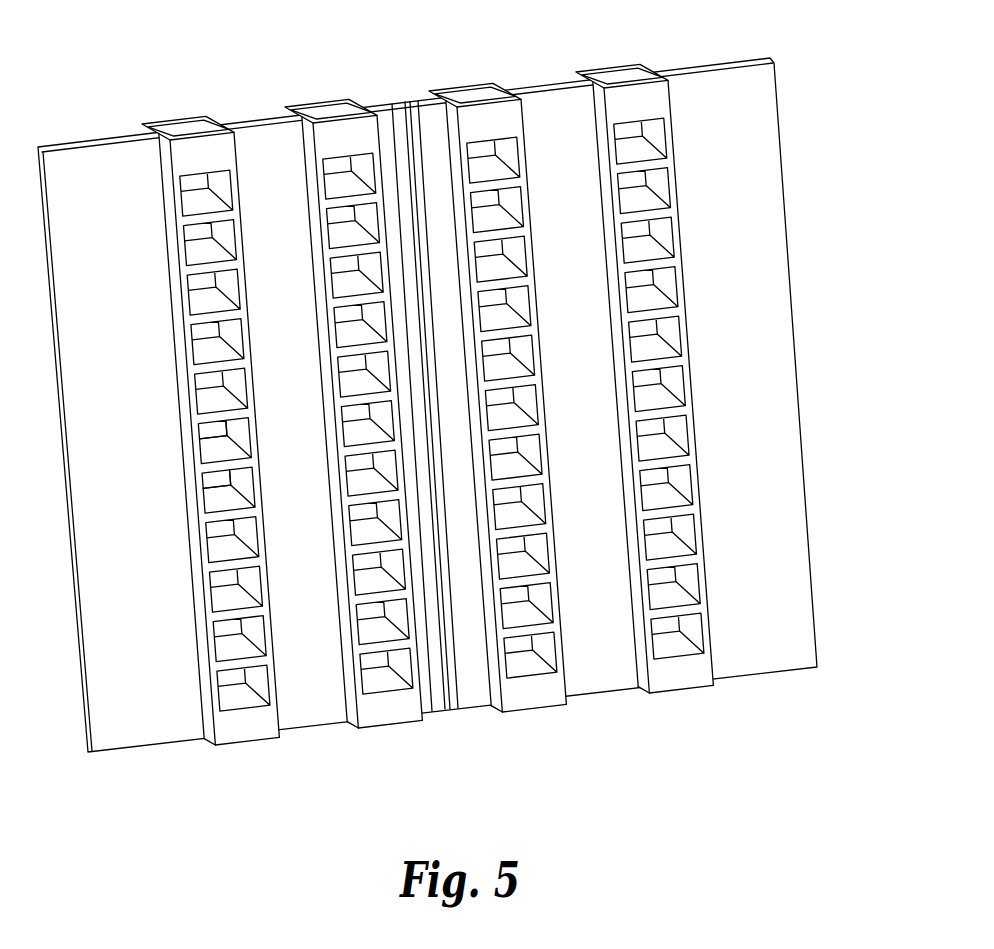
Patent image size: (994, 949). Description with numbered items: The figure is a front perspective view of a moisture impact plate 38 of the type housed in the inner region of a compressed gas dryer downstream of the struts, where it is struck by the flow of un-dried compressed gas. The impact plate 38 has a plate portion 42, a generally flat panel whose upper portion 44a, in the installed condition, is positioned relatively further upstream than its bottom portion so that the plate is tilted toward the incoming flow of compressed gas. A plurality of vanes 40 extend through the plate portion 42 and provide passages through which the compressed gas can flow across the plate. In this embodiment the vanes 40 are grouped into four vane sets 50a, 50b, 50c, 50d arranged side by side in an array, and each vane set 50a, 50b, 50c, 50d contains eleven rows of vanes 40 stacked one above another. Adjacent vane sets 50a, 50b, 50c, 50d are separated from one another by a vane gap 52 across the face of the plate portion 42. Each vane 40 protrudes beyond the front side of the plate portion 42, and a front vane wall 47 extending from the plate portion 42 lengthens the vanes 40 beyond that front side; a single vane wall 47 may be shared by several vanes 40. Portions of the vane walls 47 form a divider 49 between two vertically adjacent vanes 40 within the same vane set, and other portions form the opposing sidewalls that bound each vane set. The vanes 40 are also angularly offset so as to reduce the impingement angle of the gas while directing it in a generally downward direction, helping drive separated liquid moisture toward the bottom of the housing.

The impact plate 38 is at (457, 379).
The plate portion 42 is at (766, 348).
The upper portion 44a is at (742, 190).
The front vane wall 47 is at (296, 734).
The divider 49 is at (220, 500).
The vane 40 is at (230, 638).
The first vane set 50a is at (187, 408).
The second vane set 50b is at (352, 132).
The third vane set 50c is at (497, 116).
The fourth vane set 50d is at (622, 102).
The vane gap 52 is at (266, 148).